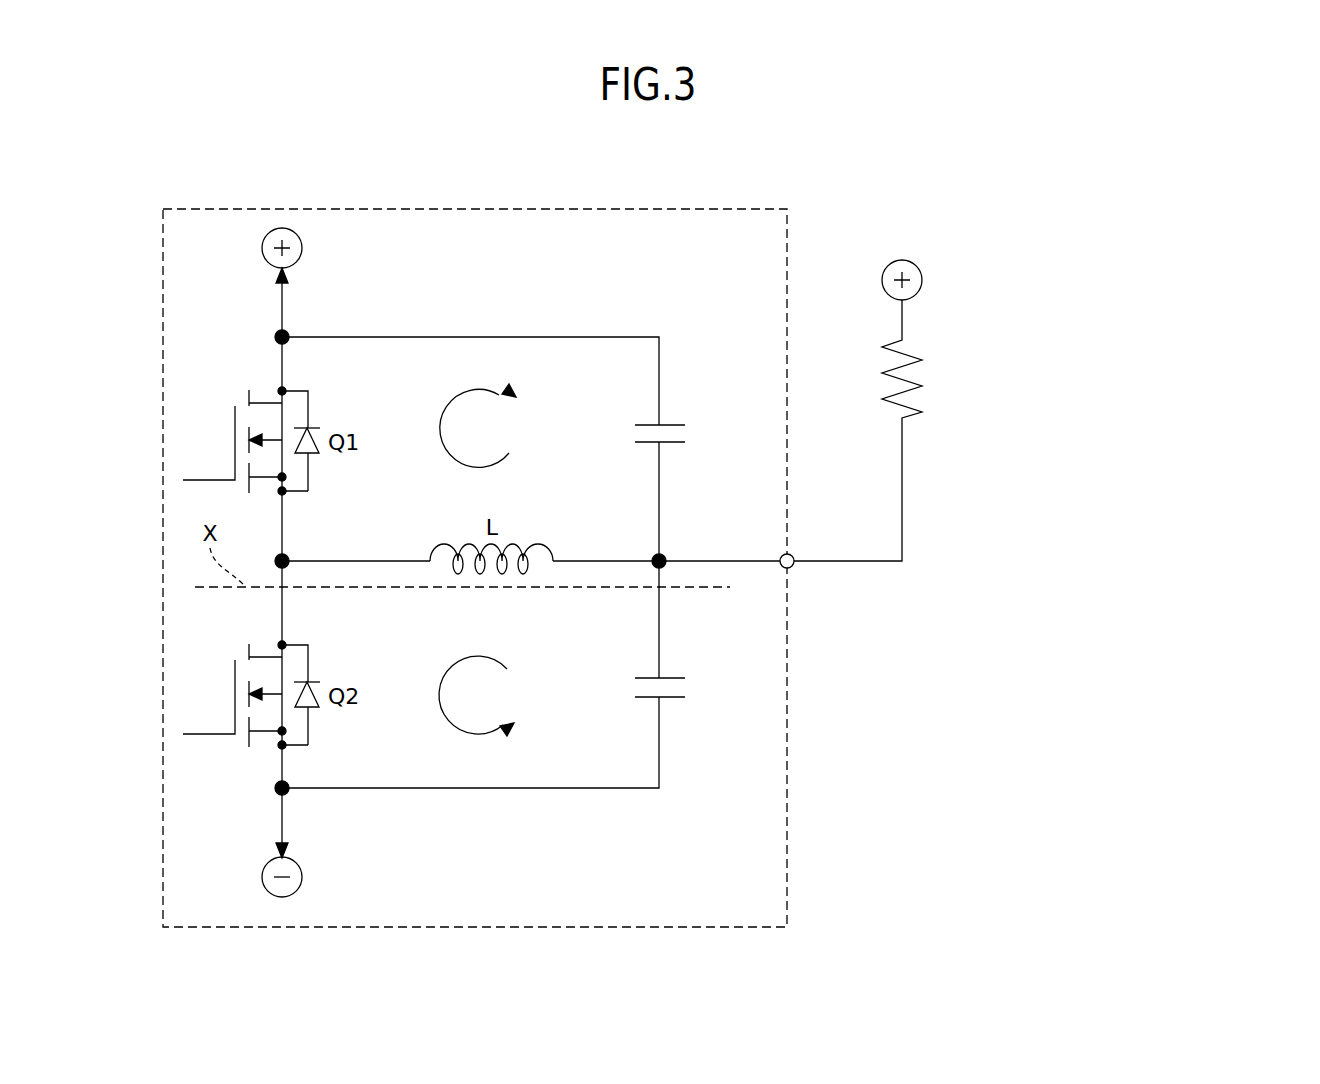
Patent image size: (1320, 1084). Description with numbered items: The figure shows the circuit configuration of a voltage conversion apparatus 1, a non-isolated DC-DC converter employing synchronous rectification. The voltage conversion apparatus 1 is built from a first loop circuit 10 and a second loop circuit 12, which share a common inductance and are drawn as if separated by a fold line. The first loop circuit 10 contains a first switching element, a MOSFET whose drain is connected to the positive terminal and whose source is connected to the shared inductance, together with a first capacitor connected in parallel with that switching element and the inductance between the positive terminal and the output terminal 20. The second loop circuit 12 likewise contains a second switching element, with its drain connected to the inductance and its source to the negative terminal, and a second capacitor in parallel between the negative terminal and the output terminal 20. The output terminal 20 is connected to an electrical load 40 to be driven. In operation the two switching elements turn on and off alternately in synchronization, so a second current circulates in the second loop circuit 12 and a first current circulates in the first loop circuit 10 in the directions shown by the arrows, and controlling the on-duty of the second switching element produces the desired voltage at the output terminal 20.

The voltage conversion apparatus 1 is at (550, 192).
The first loop circuit 10 is at (522, 330).
The second loop circuit 12 is at (522, 795).
The output terminal 20 is at (794, 566).
The electrical load 40 is at (924, 374).